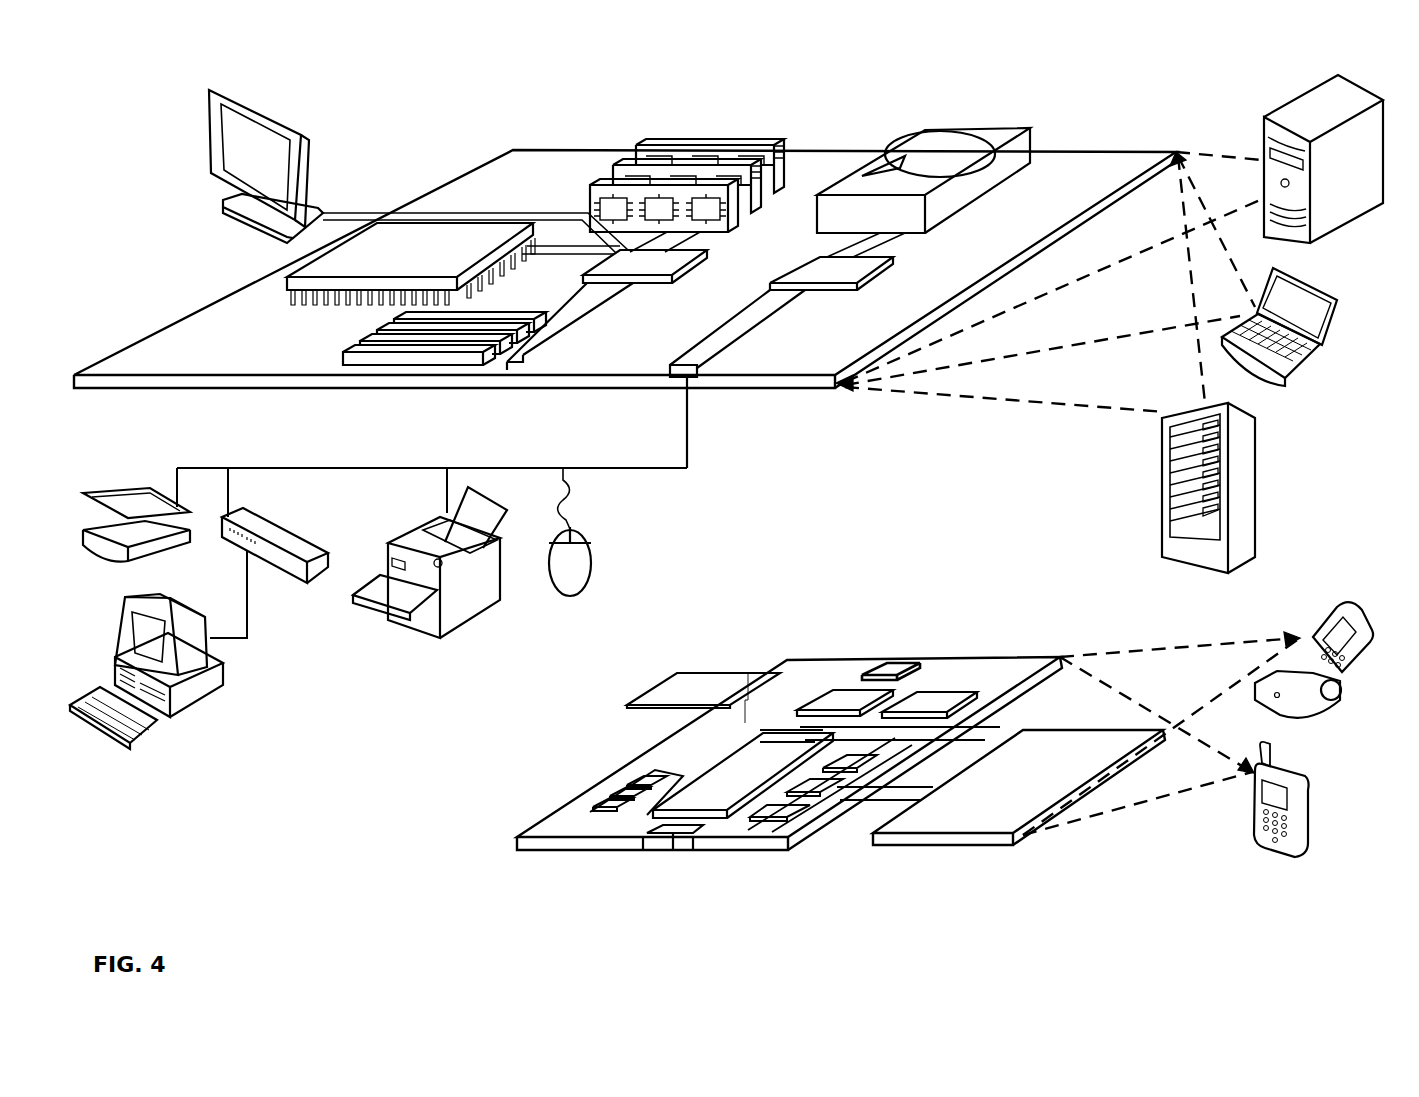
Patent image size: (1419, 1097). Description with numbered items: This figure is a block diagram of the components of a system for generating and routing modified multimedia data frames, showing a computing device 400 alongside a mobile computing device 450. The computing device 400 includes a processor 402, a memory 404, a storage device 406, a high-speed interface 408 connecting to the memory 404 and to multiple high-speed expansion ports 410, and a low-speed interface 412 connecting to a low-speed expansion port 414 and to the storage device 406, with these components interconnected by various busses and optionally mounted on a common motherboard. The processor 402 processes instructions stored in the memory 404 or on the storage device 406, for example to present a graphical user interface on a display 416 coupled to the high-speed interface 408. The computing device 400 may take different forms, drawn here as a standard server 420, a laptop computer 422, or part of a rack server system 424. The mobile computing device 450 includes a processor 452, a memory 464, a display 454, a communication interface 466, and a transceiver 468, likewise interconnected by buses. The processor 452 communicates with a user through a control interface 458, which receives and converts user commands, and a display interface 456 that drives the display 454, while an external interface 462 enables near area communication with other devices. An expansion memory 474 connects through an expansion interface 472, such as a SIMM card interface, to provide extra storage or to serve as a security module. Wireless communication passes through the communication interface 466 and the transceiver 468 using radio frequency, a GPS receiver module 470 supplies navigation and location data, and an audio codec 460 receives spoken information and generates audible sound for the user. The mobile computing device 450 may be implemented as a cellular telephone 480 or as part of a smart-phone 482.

The computing device 400 is at (427, 119).
The processor 402 is at (247, 280).
The memory 404 is at (647, 140).
The storage device 406 is at (903, 128).
The high-speed interface 408 is at (600, 258).
The high-speed expansion ports 410 is at (360, 345).
The low-speed interface 412 is at (810, 268).
The low-speed expansion port 414 is at (708, 378).
The display 416 is at (211, 90).
The standard server 420 is at (1263, 132).
The laptop computer 422 is at (1334, 305).
The rack server system 424 is at (1160, 515).
The mobile computing device 450 is at (485, 855).
The processor 452 is at (713, 800).
The display 454 is at (973, 820).
The display interface 456 is at (795, 815).
The control interface 458 is at (828, 789).
The audio codec 460 is at (857, 768).
The external interface 462 is at (673, 838).
The memory 464 is at (620, 792).
The communication interface 466 is at (845, 700).
The transceiver 468 is at (928, 700).
The GPS receiver module 470 is at (902, 657).
The expansion interface 472 is at (768, 673).
The expansion memory 474 is at (682, 673).
The cellular telephone 480 is at (1317, 612).
The smart-phone 482 is at (1252, 802).